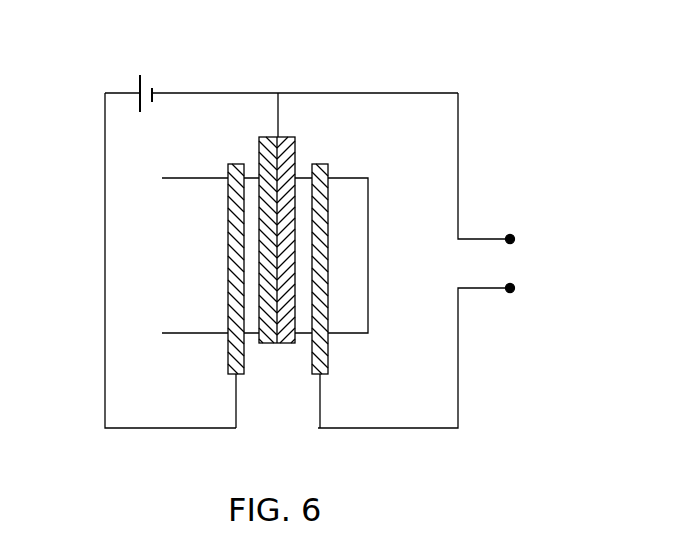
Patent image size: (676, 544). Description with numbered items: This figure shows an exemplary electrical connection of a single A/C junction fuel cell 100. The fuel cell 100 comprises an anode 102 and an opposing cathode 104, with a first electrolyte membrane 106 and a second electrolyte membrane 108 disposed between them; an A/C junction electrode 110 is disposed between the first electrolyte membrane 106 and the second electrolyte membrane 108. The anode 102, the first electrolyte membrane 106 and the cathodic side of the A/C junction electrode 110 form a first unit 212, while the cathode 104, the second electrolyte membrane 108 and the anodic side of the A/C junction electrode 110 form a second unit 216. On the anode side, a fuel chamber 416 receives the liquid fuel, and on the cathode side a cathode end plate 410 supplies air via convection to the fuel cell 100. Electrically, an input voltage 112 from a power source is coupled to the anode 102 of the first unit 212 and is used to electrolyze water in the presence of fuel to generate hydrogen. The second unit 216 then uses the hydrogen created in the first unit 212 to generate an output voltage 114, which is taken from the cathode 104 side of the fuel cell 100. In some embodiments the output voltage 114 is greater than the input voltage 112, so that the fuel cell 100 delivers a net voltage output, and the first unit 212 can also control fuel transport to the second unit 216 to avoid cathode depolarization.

The fuel cell 100 is at (314, 41).
The anode 102 is at (225, 257).
The cathode 104 is at (329, 283).
The first electrolyte membrane 106 is at (245, 315).
The second electrolyte membrane 108 is at (308, 214).
The A/C junction electrode 110 is at (299, 146).
The input voltage 112 is at (154, 64).
The output voltage 114 is at (532, 304).
The first unit 212 is at (191, 357).
The second unit 216 is at (354, 357).
The cathode end plate 410 is at (370, 334).
The fuel chamber 416 is at (186, 197).